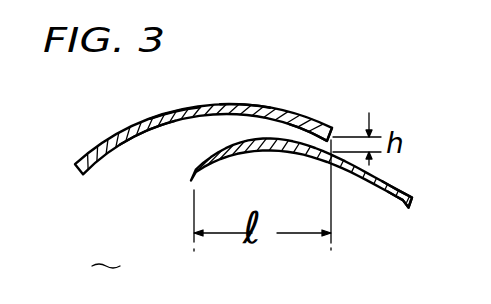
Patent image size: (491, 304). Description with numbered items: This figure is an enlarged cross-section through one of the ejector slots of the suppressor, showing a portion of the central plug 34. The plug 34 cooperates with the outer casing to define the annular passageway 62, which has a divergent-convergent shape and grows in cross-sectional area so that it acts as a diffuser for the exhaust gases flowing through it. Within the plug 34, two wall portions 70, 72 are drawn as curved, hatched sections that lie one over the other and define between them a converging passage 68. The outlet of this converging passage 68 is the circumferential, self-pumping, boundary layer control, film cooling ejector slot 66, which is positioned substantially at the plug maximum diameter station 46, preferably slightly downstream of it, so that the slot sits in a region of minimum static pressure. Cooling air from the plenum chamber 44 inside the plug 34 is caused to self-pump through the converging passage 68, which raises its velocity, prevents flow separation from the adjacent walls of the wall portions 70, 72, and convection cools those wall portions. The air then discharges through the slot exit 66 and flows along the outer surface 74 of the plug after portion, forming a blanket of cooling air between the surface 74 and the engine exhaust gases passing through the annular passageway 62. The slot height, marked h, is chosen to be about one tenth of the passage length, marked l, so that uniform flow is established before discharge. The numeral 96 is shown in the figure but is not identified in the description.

The plug 34 is at (98, 144).
The annular passageway 62 is at (142, 105).
The wall portion 70 is at (176, 109).
The plug maximum diameter station 46 is at (242, 105).
The converging passage 68 is at (278, 131).
The inner surface region 96 is at (161, 178).
The ejector slot 66 is at (318, 128).
The wall portion 72 is at (307, 153).
The outer surface of plug after portion 74 is at (393, 199).
The plenum chamber 44 is at (116, 247).